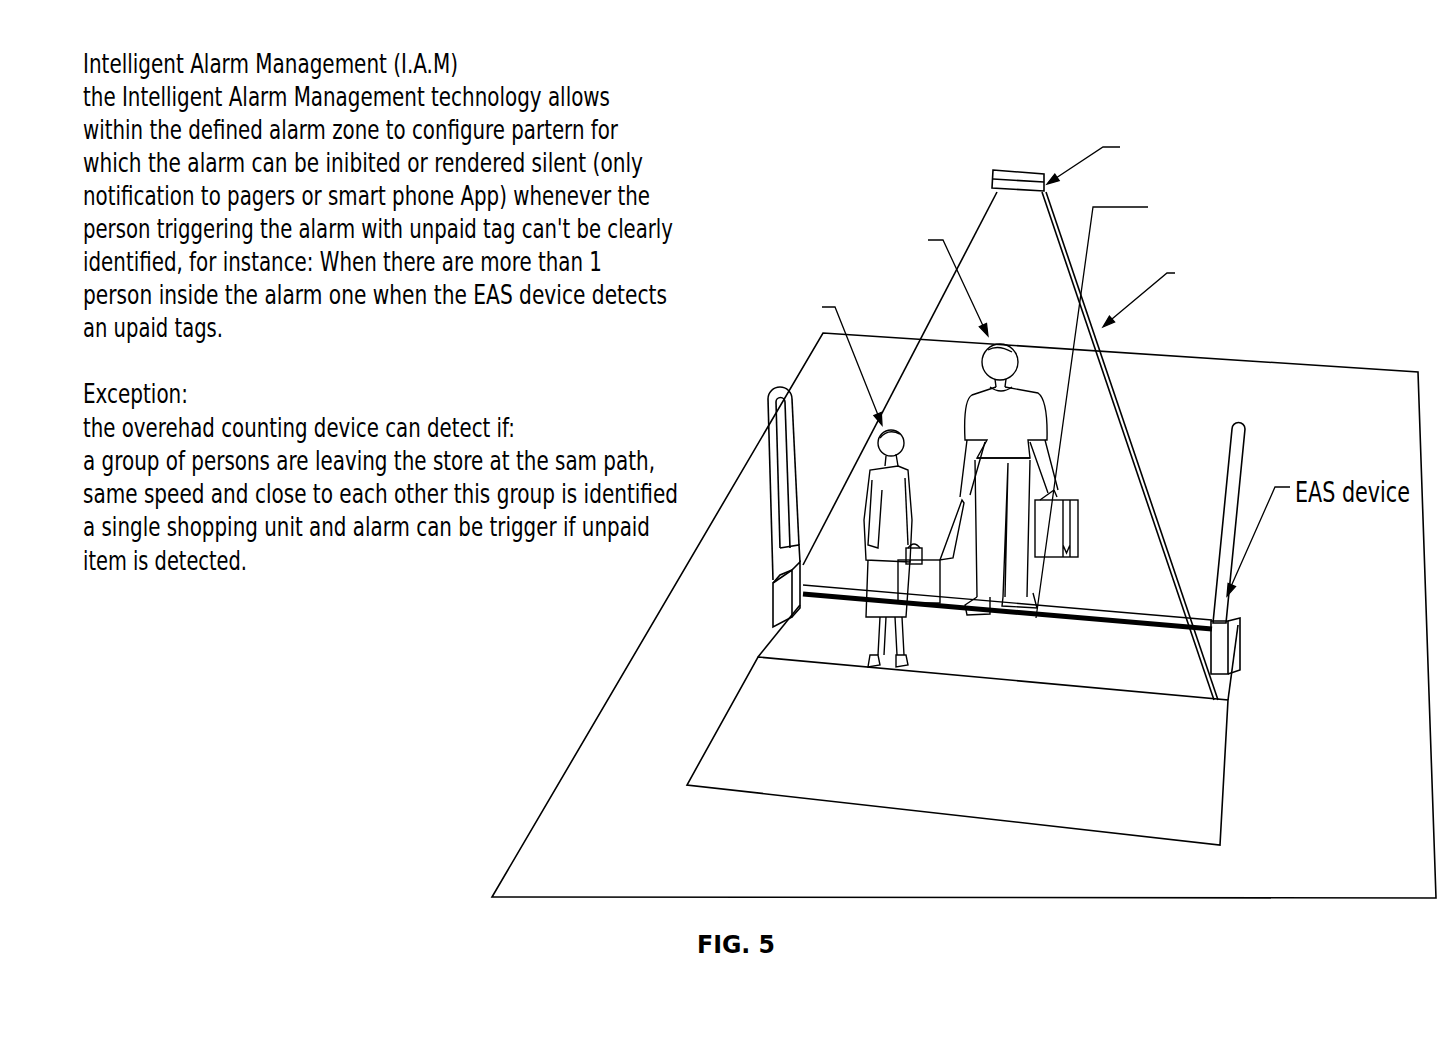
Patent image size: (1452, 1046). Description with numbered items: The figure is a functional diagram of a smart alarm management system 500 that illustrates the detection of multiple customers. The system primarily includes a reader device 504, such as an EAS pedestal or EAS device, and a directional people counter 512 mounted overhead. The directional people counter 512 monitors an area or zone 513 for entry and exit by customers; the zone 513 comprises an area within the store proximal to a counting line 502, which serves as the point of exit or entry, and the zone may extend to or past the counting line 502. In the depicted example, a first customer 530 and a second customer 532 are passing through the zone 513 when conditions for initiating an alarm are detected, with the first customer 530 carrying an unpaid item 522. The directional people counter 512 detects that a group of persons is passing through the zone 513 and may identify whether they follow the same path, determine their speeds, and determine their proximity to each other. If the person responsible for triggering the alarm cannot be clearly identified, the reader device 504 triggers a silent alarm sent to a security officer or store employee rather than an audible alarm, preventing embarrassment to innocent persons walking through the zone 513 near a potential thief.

The smart alarm management system 500 is at (1174, 97).
The directional people counter 512 is at (1014, 171).
The zone 513 is at (1000, 226).
The first customer 530 is at (988, 398).
The second customer 532 is at (876, 468).
The unpaid item (bag) 522 is at (1072, 500).
The reader device 504 is at (773, 600).
The counting line 502 is at (1084, 614).